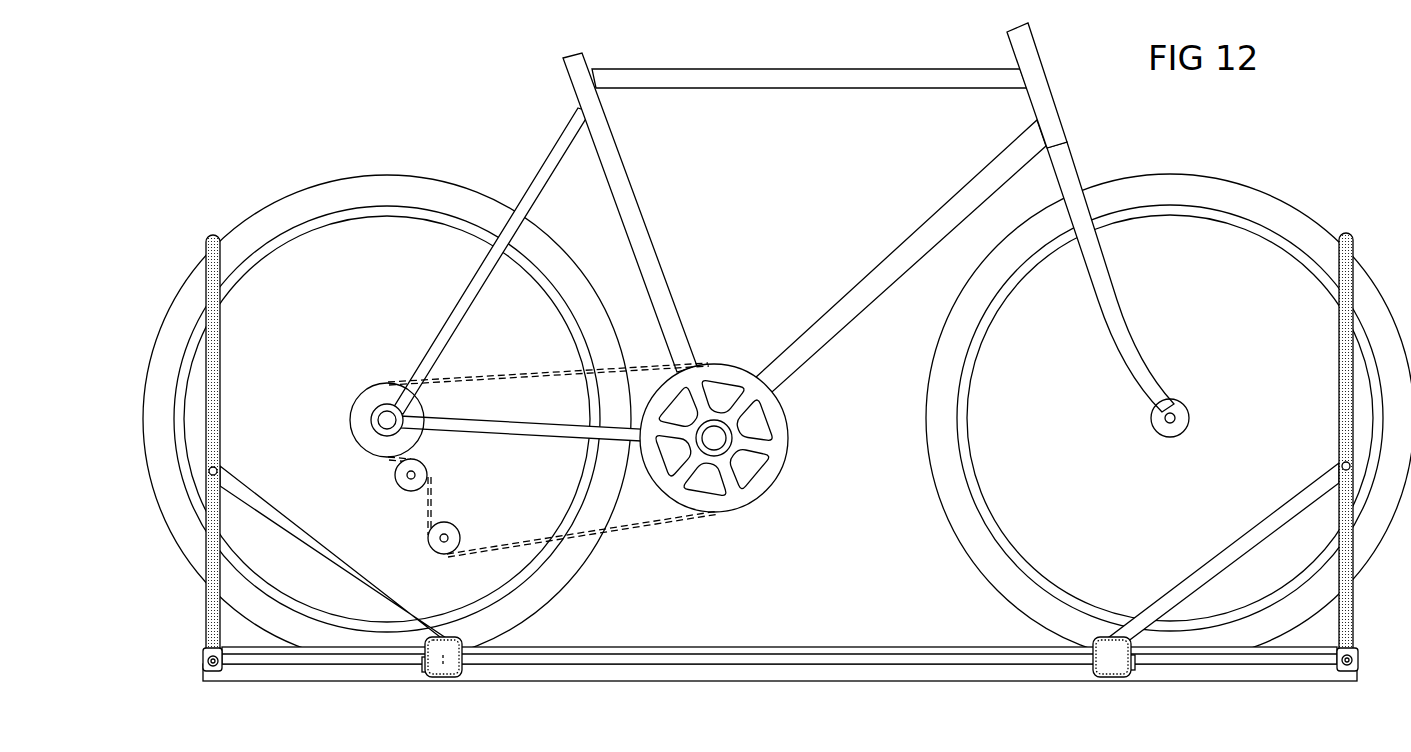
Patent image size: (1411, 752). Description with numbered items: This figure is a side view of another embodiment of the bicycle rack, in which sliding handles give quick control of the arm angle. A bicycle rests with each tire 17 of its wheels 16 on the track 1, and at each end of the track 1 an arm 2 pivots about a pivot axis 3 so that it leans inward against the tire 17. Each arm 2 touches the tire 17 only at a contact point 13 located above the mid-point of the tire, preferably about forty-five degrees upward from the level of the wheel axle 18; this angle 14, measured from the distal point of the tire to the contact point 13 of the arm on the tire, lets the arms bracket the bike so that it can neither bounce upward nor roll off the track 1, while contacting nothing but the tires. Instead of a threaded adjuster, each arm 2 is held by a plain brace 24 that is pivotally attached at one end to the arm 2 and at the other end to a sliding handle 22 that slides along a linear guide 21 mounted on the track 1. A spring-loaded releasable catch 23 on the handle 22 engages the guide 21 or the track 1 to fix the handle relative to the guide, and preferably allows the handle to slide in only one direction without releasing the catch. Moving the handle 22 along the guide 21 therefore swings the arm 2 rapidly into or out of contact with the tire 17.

The track 1 is at (878, 683).
The arm 2 is at (1339, 352).
The pivot axis of arm 3 is at (1361, 660).
The contact point of arm and tire 13 is at (1344, 238).
The angle from distal point of tire to contact point of arm on tire 14 is at (433, 588).
The wheel 16 is at (967, 440).
The tire 17 is at (937, 472).
The wheel axle 18 is at (1173, 421).
The guide for sliding handle 21 is at (927, 658).
The sliding handle 22 is at (1105, 670).
The catch 23 is at (1133, 672).
The plain brace for pivoting arm 24 is at (1222, 552).